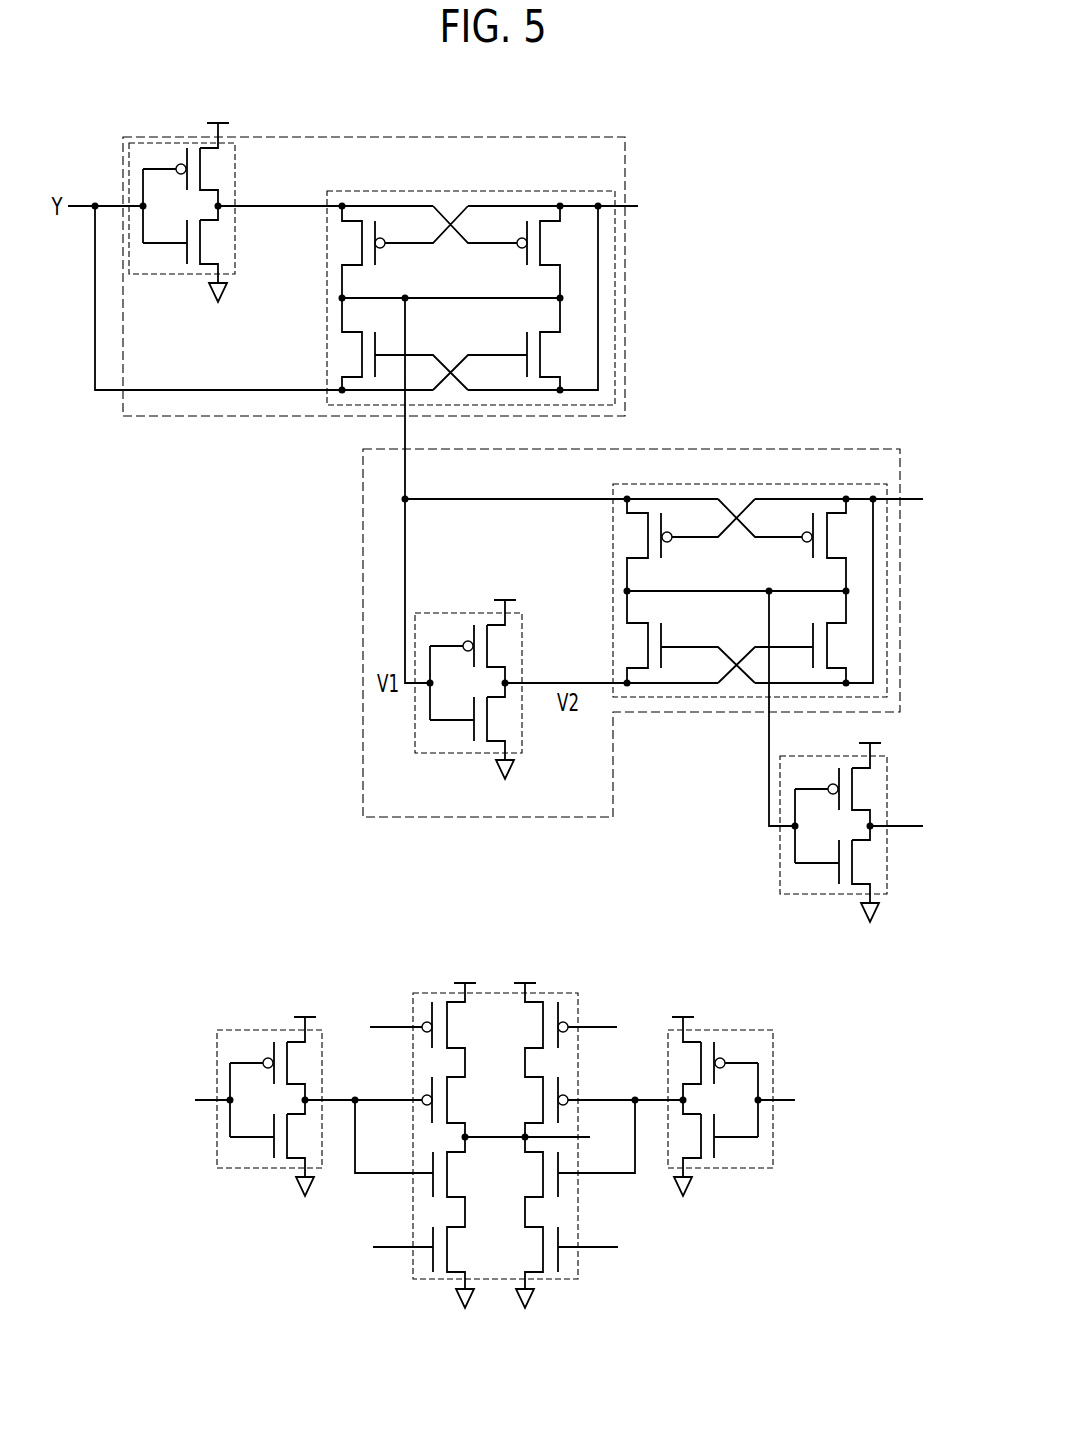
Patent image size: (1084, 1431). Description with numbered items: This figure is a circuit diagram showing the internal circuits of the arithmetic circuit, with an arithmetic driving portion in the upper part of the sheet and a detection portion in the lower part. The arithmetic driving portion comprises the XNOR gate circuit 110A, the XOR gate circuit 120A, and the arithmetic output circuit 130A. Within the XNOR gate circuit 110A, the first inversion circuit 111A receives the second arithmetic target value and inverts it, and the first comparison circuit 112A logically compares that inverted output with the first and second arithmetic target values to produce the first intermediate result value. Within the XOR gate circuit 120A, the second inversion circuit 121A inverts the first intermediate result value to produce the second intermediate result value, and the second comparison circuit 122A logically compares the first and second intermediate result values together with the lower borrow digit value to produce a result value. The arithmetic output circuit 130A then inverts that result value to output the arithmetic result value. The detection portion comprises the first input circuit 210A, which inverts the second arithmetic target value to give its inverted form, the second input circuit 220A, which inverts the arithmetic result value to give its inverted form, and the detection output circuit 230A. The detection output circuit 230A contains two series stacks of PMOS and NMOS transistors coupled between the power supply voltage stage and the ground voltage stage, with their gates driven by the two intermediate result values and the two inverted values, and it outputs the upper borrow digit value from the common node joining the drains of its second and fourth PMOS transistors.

The XNOR gate circuit 110A is at (553, 137).
The first inversion circuit 111A is at (235, 166).
The first comparison circuit 112A is at (521, 191).
The XOR gate circuit 120A is at (826, 449).
The second inversion circuit 121A is at (445, 613).
The second comparison circuit 122A is at (768, 484).
The arithmetic output circuit 130A is at (780, 872).
The first input circuit 210A is at (248, 1030).
The second input circuit 220A is at (743, 1030).
The detection output circuit 230A is at (552, 993).